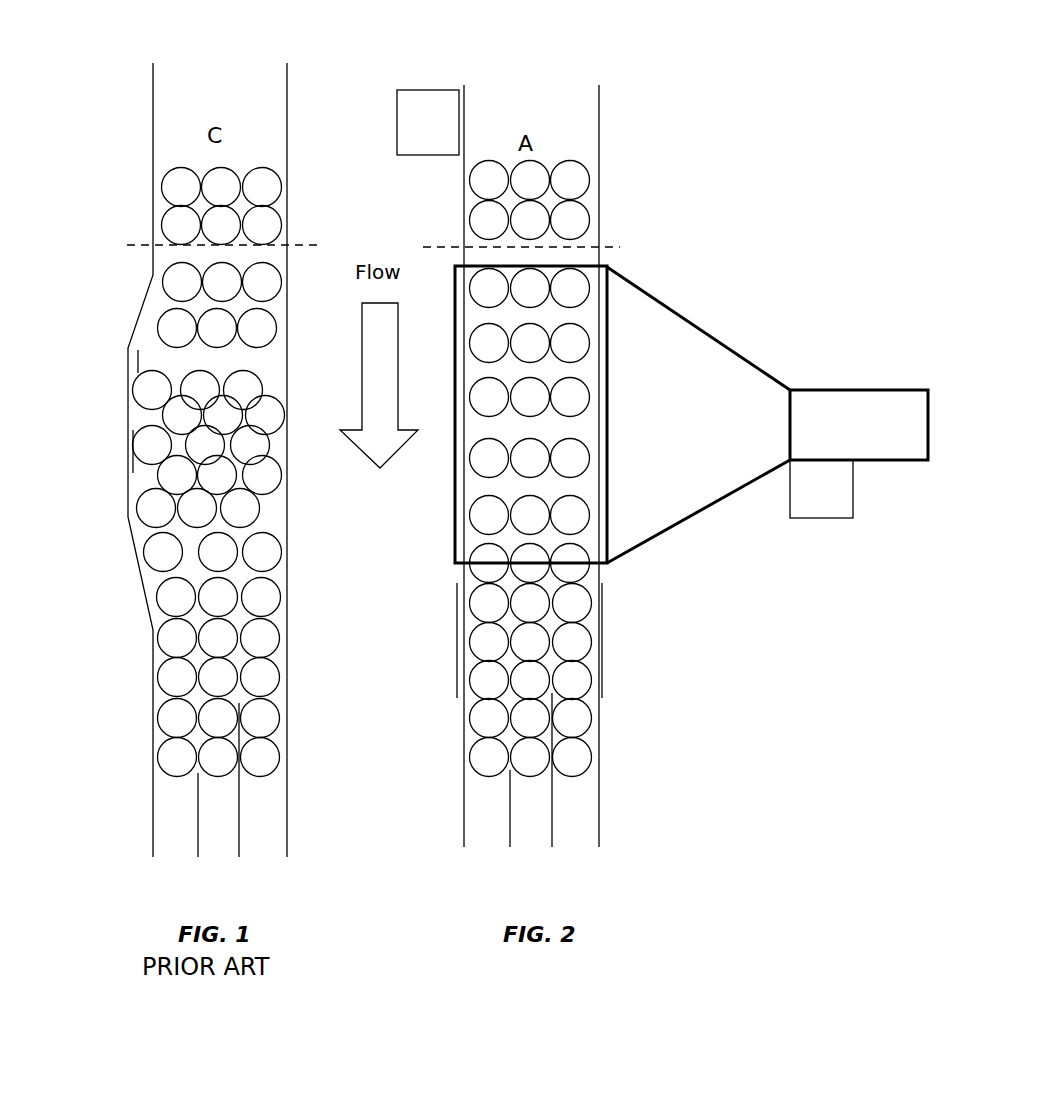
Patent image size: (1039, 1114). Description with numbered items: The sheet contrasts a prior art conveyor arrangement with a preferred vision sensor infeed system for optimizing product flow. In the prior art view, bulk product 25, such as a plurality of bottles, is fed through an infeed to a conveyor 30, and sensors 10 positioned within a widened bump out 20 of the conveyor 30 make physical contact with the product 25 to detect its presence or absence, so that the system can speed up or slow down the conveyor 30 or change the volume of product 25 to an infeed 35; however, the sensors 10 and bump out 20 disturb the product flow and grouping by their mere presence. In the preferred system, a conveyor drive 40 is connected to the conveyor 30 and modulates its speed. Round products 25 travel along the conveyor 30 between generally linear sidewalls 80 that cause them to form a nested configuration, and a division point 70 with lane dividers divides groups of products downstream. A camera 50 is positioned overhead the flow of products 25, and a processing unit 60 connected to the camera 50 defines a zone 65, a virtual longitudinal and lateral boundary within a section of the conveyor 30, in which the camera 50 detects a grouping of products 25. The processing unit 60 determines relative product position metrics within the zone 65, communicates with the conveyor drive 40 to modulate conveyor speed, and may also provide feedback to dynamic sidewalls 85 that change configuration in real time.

In FIG. 1, the sensors 10 is at (137, 352).
In FIG. 1, the bump out 20 is at (128, 410).
In FIG. 1, the products 25 is at (262, 187).
In FIG. 2, the products 25 is at (570, 180).
In FIG. 1, the conveyor 30 is at (278, 260).
In FIG. 2, the conveyor 30 is at (588, 258).
In FIG. 2, the infeed 35 is at (580, 143).
In FIG. 2, the conveyor drive 40 is at (428, 115).
In FIG. 2, the camera 50 is at (853, 405).
In FIG. 2, the processing unit 60 is at (820, 497).
In FIG. 2, the zone 65 is at (607, 425).
In FIG. 1, the division point 70 is at (239, 830).
In FIG. 2, the division point 70 is at (552, 810).
In FIG. 2, the sidewalls 80 is at (455, 465).
In FIG. 2, the dynamic sidewalls 85 is at (457, 640).